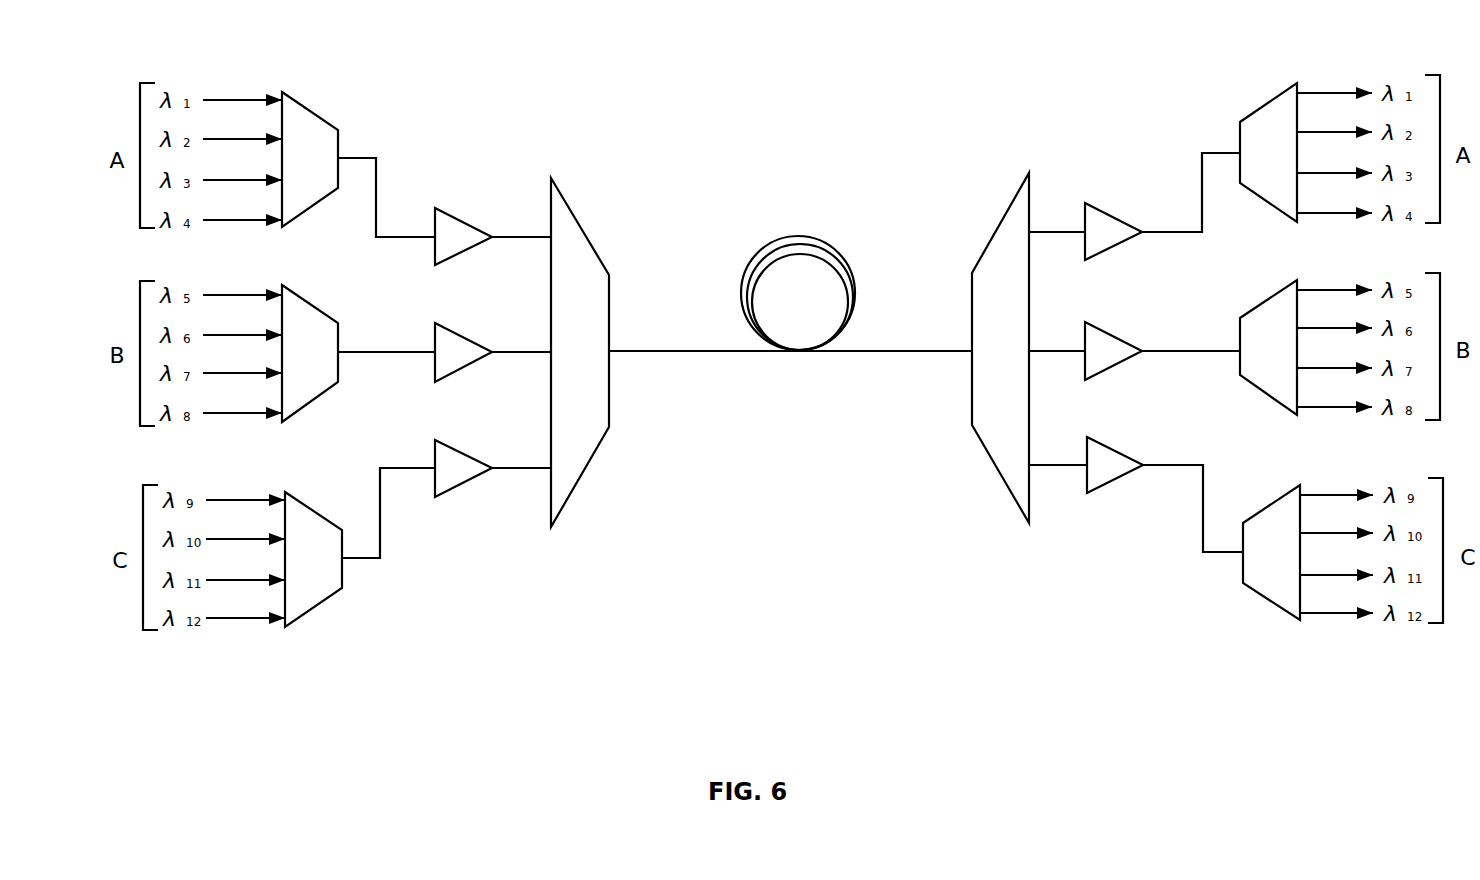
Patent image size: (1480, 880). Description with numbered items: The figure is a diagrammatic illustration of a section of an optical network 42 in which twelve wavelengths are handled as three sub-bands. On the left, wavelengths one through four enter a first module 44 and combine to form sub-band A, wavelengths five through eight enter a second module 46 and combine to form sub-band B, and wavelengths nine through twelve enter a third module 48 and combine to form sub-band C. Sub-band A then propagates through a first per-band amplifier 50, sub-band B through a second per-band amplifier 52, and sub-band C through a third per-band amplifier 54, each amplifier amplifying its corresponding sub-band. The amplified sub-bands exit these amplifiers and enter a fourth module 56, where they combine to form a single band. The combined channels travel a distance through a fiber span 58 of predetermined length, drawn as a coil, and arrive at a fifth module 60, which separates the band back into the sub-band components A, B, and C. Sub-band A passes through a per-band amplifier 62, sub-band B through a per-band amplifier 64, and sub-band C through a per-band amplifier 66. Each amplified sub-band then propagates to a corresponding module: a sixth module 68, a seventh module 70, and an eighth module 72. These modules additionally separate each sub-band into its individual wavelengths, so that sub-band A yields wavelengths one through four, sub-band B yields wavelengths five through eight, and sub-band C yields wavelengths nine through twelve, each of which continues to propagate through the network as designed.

The optical network 42 is at (608, 84).
The first module 44 is at (310, 133).
The second module 46 is at (310, 327).
The third module 48 is at (312, 530).
The first per-band amplifier 50 is at (462, 235).
The second per-band amplifier 52 is at (462, 351).
The third per-band amplifier 54 is at (462, 467).
The fourth module 56 is at (578, 278).
The fiber span 58 is at (795, 232).
The fifth module 60 is at (998, 267).
The per-band amplifier 62 is at (1108, 232).
The per-band amplifier 64 is at (1108, 350).
The per-band amplifier 66 is at (1108, 465).
The sixth module 68 is at (1270, 152).
The seventh module 70 is at (1270, 345).
The eighth module 72 is at (1273, 550).